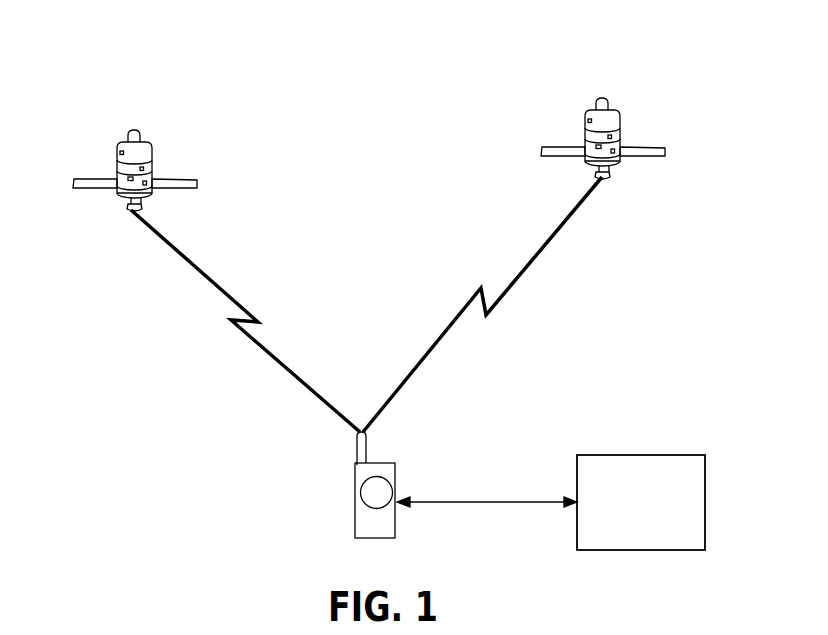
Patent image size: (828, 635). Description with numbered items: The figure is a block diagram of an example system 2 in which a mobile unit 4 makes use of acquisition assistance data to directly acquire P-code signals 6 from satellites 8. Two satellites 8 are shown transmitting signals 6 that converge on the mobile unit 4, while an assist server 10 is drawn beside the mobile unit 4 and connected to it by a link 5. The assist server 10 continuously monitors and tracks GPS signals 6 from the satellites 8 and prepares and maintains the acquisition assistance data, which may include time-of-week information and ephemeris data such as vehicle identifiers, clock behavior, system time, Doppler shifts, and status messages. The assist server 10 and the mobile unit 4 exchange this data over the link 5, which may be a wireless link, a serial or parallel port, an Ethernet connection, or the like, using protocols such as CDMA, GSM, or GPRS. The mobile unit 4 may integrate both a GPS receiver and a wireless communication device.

The system 2 is at (213, 54).
The mobile unit 4 is at (394, 492).
The link 5 is at (485, 502).
The P-code signals 6 is at (250, 310).
The satellites 8 is at (142, 135).
The assist server 10 is at (628, 540).